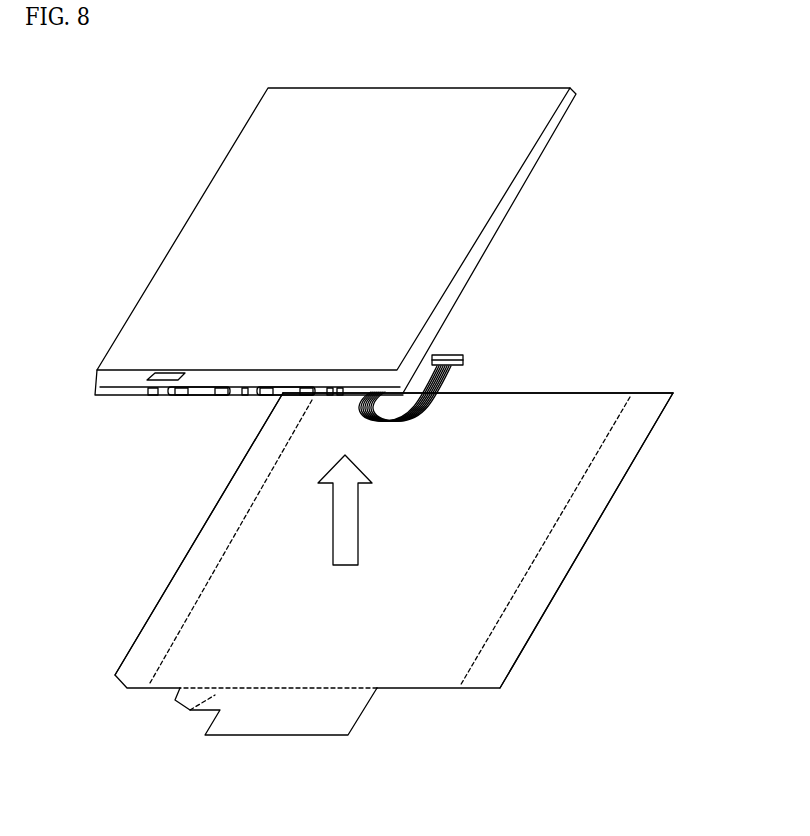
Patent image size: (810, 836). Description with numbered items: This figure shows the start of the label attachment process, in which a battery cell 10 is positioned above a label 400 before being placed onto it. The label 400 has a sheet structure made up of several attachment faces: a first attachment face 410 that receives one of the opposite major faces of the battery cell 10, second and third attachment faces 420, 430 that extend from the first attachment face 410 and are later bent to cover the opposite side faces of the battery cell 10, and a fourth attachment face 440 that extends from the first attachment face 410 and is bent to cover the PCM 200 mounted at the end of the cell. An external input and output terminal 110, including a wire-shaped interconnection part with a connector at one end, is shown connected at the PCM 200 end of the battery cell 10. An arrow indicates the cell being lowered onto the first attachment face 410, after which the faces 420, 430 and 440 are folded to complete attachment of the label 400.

The battery cell 10 is at (207, 268).
The external input and output terminal 110 is at (465, 365).
The PCM 200 is at (98, 393).
The label 400 is at (121, 636).
The first attachment face 410 is at (571, 406).
The second attachment face 420 is at (577, 540).
The third attachment face 430 is at (184, 586).
The fourth attachment face 440 is at (190, 712).